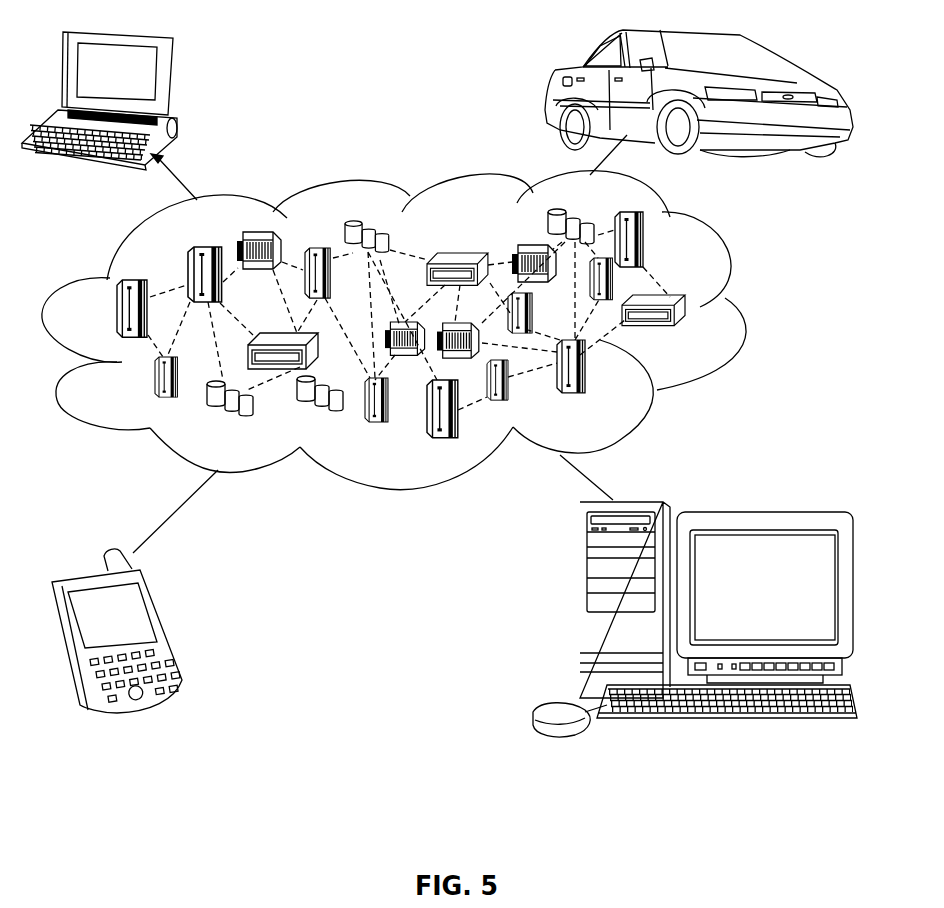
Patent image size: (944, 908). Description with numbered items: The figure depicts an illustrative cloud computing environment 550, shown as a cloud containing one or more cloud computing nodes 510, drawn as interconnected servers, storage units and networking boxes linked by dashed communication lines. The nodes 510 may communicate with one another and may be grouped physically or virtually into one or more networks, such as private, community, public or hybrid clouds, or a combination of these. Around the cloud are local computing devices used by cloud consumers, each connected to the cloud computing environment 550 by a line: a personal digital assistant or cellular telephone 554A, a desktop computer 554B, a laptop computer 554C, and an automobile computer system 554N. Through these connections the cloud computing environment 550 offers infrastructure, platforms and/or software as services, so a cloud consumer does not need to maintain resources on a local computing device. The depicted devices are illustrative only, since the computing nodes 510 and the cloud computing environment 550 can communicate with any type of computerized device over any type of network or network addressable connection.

The cloud computing nodes 510 is at (704, 331).
The cloud computing environment 550 is at (730, 272).
The personal digital assistant (PDA) or cellular telephone 554A is at (168, 627).
The desktop computer 554B is at (580, 605).
The laptop computer 554C is at (173, 82).
The automobile computer system 554N is at (550, 88).